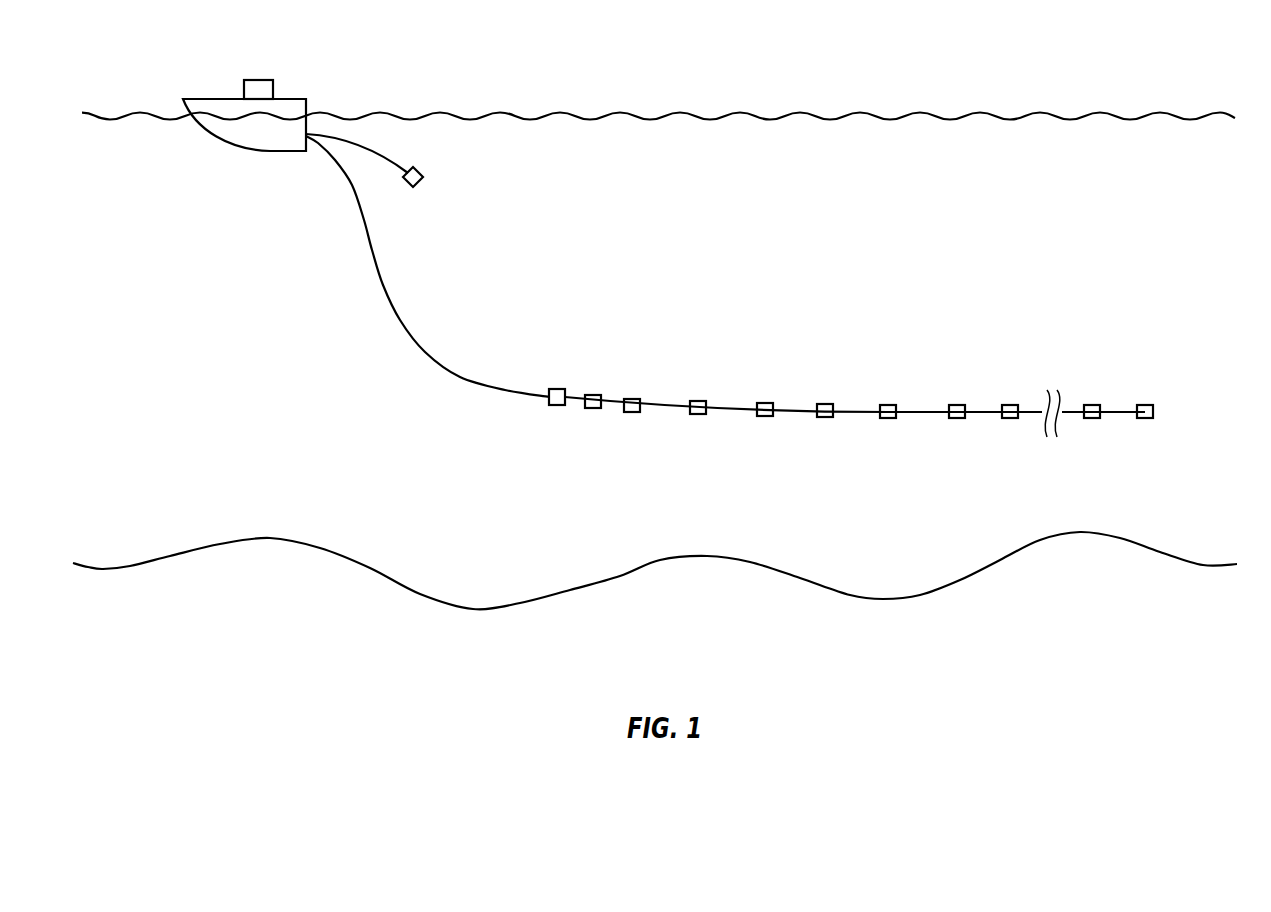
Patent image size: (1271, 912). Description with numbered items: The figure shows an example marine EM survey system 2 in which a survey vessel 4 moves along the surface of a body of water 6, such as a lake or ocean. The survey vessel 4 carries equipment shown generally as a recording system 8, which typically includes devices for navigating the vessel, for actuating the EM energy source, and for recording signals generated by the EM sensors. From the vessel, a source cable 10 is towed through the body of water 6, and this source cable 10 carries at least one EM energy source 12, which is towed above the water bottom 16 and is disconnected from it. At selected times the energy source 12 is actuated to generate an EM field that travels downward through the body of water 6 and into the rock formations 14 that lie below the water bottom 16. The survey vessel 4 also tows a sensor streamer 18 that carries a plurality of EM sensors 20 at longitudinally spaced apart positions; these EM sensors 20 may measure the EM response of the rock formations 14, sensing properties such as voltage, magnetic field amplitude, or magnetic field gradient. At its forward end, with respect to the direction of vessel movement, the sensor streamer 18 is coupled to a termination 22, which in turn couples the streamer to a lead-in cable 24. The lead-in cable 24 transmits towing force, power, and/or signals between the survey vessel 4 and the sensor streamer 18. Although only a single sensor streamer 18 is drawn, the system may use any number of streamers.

The marine EM survey system 2 is at (296, 276).
The survey vessel 4 is at (295, 107).
The body of water 6 is at (782, 201).
The recording system 8 is at (243, 92).
The source cable 10 is at (394, 157).
The EM energy source 12 is at (411, 188).
The rock formations 14 is at (700, 629).
The water bottom 16 is at (827, 585).
The sensor streamer 18 is at (733, 408).
The EM sensors 20 is at (592, 408).
The termination 22 is at (556, 389).
The lead-in cable 24 is at (413, 338).